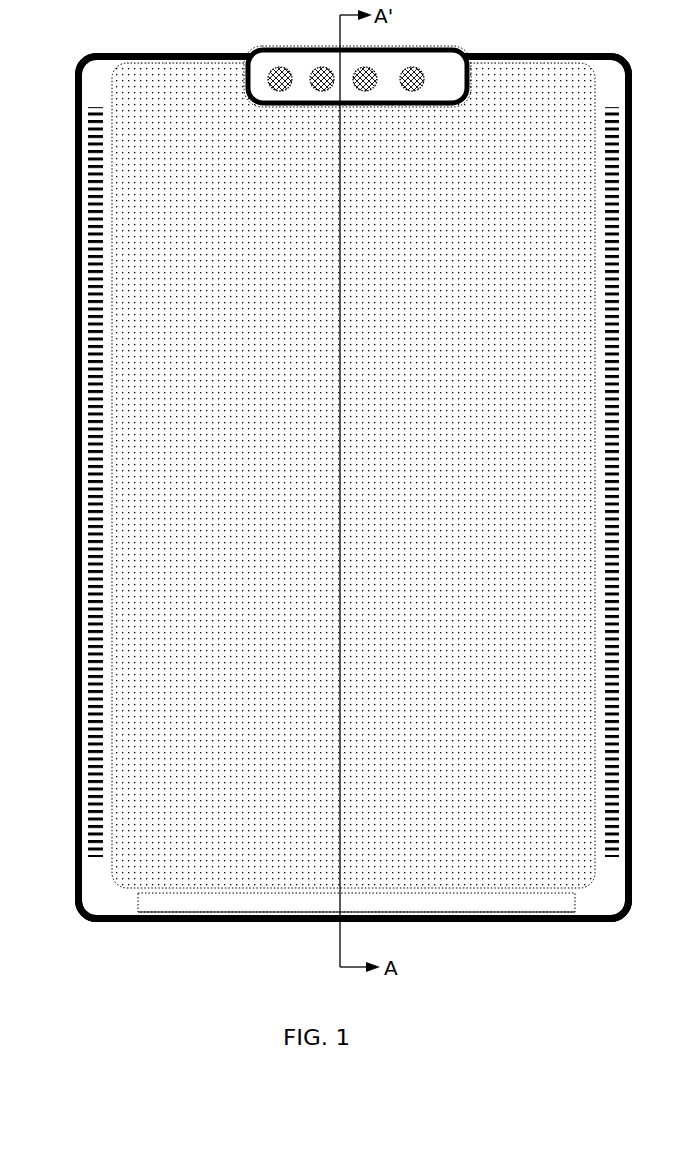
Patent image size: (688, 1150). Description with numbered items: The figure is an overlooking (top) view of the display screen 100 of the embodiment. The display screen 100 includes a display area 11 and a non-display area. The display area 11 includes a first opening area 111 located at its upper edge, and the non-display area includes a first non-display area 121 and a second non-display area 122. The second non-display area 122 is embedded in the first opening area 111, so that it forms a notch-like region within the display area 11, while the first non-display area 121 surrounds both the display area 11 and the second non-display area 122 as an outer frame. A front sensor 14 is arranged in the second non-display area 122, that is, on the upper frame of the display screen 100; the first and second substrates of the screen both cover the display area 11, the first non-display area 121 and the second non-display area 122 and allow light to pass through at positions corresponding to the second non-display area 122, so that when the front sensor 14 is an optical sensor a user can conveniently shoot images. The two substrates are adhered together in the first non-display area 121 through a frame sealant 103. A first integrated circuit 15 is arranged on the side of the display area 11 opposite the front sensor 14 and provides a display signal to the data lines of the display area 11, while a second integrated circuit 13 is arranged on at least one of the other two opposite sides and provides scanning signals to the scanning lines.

The display screen 100 is at (586, 22).
The display area 11 is at (158, 380).
The second integrated circuit 13 is at (88, 310).
The front sensor 14 is at (318, 70).
The first integrated circuit 15 is at (218, 905).
The frame sealant 103 is at (72, 262).
The first opening area 111 is at (252, 106).
The first non-display area 121 is at (91, 74).
The second non-display area 122 is at (449, 68).